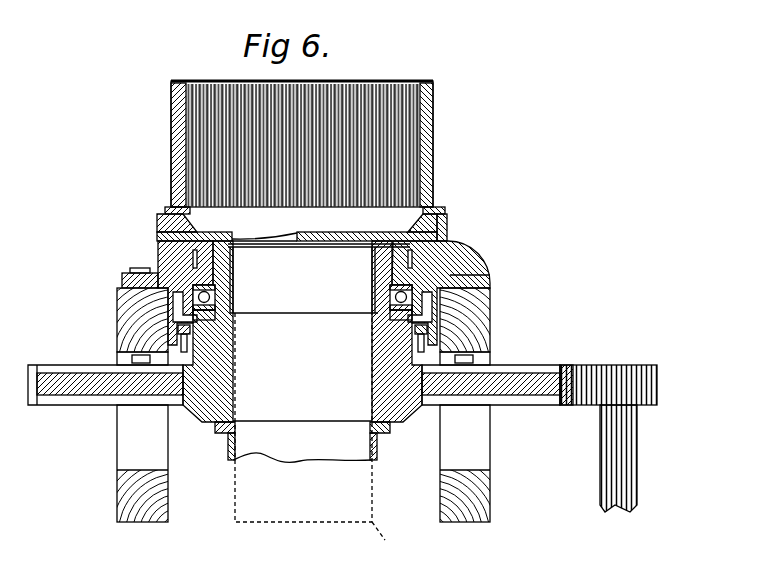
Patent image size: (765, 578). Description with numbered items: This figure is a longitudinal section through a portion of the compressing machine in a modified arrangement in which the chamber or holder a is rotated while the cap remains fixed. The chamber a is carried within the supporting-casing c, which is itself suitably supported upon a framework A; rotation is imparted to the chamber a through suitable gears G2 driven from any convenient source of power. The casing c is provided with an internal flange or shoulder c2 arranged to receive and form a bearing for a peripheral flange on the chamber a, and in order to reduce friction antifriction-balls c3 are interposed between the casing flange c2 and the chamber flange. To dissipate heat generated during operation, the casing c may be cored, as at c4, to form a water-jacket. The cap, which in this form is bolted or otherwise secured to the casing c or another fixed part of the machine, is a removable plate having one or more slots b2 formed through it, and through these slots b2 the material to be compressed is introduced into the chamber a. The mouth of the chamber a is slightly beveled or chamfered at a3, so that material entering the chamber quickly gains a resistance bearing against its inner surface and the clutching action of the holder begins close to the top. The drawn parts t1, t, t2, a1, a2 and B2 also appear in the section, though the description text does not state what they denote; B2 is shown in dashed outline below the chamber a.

The commutator t1 is at (436, 143).
The commutator end plate t is at (340, 241).
The insulating plate t2 is at (288, 236).
The slot b2 is at (263, 234).
The supporting-casing c is at (172, 250).
The internal flange or shoulder c2 is at (214, 318).
The antifriction-balls c3 is at (215, 296).
The cored water-jacket c4 is at (173, 310).
The chamber or holder a is at (234, 353).
The bolt hole a1 is at (200, 274).
The sleeve wall a2 is at (377, 290).
The beveled or chamfered portion a3 is at (365, 247).
The framework A is at (128, 325).
The gears G2 is at (595, 378).
The shaft outline B2 is at (323, 441).